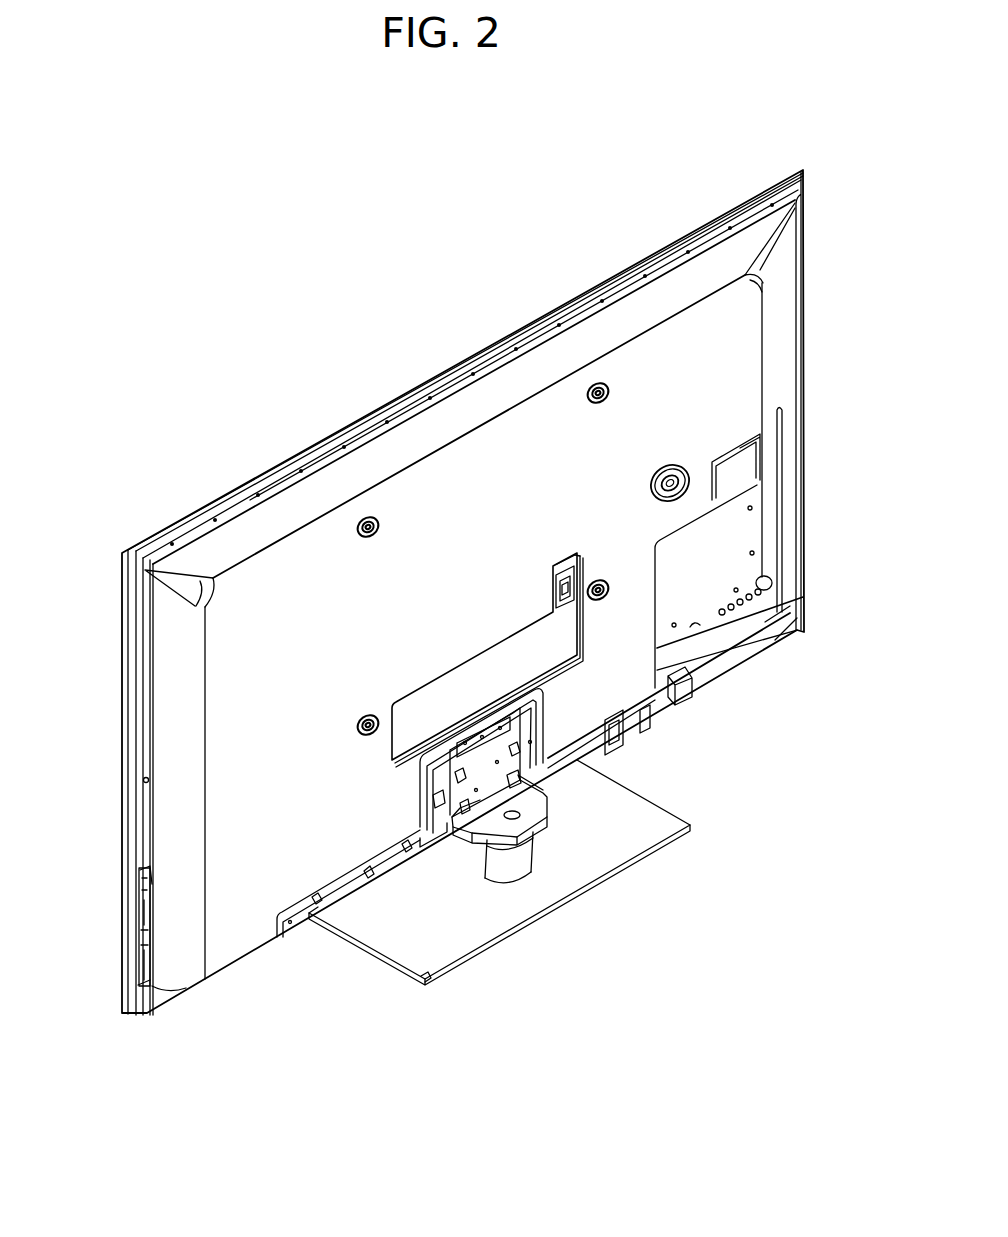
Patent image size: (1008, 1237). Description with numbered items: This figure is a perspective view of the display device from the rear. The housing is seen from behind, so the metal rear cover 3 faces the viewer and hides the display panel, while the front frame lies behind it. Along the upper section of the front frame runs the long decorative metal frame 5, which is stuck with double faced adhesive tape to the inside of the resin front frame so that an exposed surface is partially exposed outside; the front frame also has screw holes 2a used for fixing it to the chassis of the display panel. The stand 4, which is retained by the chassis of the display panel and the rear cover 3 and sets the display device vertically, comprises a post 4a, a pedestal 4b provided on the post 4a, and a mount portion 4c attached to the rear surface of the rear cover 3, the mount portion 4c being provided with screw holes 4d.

The screw holes 2a is at (688, 252).
The rear cover 3 is at (783, 338).
The stand 4 is at (465, 927).
The post 4a is at (517, 862).
The pedestal 4b is at (528, 808).
The mount portion 4c is at (493, 770).
The screw holes 4d is at (455, 780).
The decorative metal frame 5 is at (276, 462).